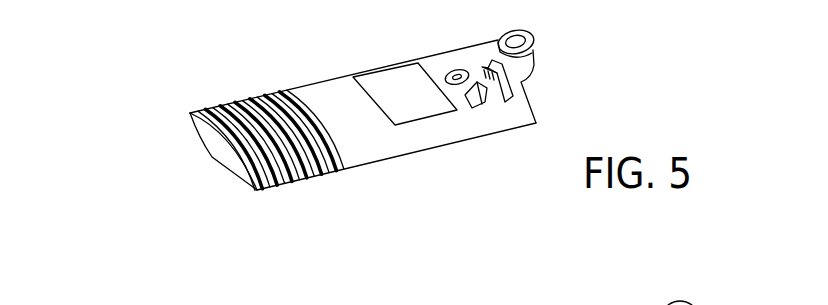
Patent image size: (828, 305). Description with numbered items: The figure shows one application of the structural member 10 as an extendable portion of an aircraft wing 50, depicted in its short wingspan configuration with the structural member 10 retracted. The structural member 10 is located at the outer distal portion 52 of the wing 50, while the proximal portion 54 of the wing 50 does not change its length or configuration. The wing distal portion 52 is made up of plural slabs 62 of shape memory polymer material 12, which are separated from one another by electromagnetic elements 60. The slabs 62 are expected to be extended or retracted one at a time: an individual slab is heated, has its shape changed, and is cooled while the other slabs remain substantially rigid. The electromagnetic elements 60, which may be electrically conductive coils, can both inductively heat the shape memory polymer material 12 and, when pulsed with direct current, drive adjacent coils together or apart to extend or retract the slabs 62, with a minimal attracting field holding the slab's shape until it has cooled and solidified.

The structural member 10 is at (305, 130).
The shape memory polymer material 12 is at (275, 73).
The wing 50 is at (190, 99).
The distal portion 52 is at (297, 190).
The proximal portion 54 is at (447, 152).
The electromagnetic elements 60 is at (292, 126).
The slabs 62 is at (352, 160).